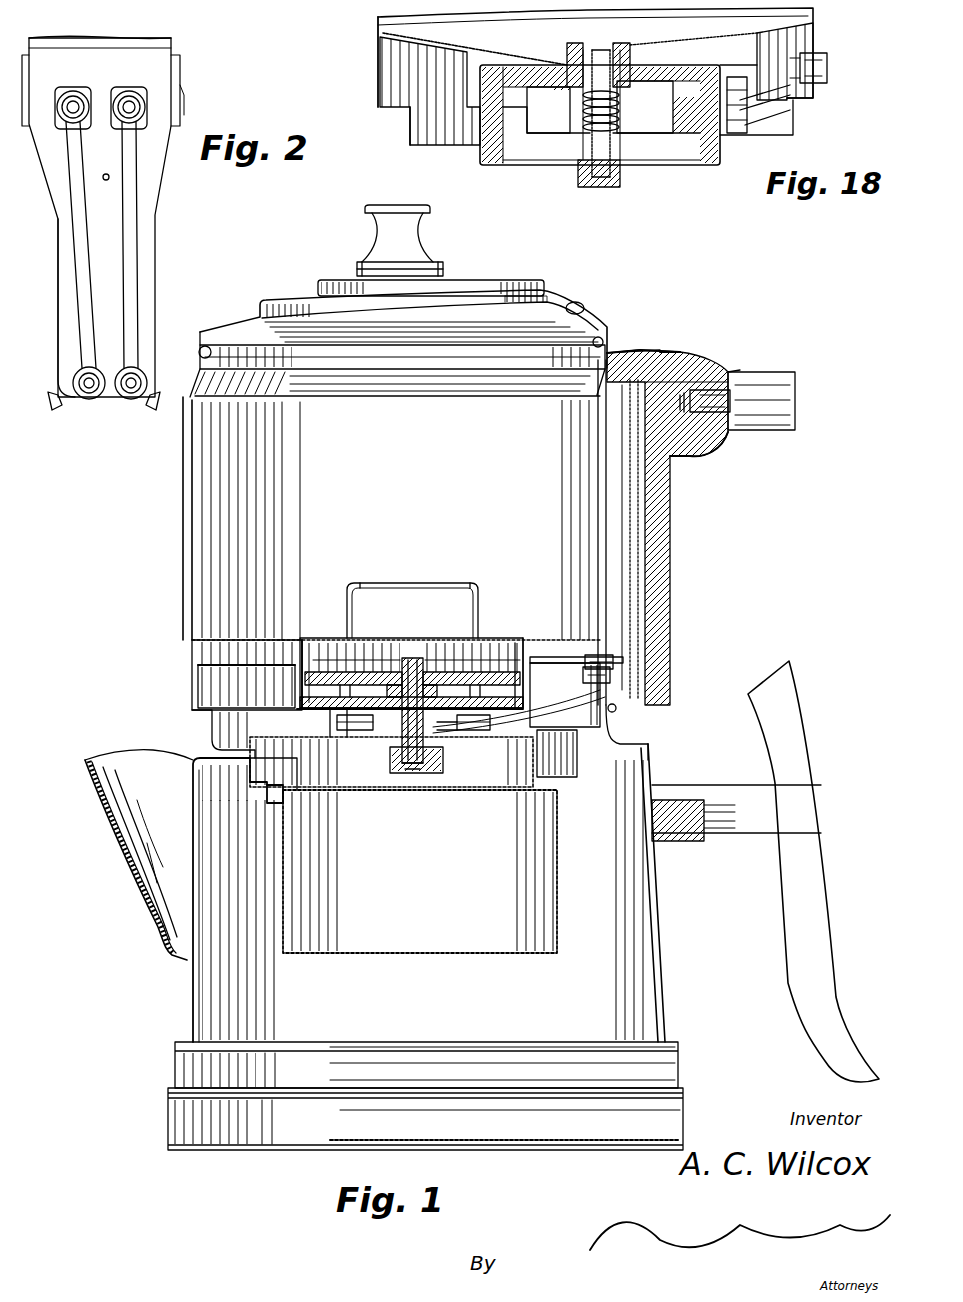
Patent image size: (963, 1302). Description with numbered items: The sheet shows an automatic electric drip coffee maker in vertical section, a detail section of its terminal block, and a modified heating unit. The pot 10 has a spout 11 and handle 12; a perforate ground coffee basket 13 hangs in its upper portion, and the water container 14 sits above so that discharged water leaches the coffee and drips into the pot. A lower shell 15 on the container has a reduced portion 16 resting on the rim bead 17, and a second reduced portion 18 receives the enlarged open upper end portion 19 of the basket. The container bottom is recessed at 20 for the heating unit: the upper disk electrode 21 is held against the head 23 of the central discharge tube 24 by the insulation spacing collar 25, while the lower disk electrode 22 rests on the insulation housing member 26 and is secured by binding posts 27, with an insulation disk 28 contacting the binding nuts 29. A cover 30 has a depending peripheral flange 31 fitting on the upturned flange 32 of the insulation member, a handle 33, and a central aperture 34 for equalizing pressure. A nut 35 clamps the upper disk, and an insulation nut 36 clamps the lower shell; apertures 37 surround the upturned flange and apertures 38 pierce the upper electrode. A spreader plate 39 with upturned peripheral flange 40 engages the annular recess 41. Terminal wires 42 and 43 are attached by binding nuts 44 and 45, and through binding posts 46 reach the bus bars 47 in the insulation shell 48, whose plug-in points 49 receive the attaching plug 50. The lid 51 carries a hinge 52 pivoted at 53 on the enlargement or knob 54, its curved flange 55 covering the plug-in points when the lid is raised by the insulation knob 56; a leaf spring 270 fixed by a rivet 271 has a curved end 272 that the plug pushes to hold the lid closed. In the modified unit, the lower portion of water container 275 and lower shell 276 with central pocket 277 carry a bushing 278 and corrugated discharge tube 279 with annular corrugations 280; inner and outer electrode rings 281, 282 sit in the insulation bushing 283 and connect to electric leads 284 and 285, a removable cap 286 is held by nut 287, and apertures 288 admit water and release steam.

In FIG. 1, the pot 10 is at (665, 955).
In FIG. 1, the spout 11 is at (125, 845).
In FIG. 1, the handle 12 is at (807, 763).
In FIG. 1, the ground coffee basket 13 is at (558, 897).
In FIG. 1, the water container 14 is at (185, 520).
In FIG. 1, the lower shell 15 is at (198, 690).
In FIG. 1, the reduced portion 16 is at (213, 730).
In FIG. 1, the rim bead 17 is at (617, 710).
In FIG. 1, the second reduced portion 18 is at (298, 762).
In FIG. 1, the open upper end portion of coffee basket 19 is at (630, 758).
In FIG. 1, the central recess 20 is at (305, 665).
In FIG. 1, the upper disk electrode 21 is at (410, 655).
In FIG. 1, the lower disk electrode 22 is at (340, 680).
In FIG. 1, the head 23 is at (445, 658).
In FIG. 1, the central discharge tube 24 is at (495, 660).
In FIG. 1, the insulation spacing collar 25 is at (425, 655).
In FIG. 1, the insulation housing member 26 is at (520, 700).
In FIG. 1, the binding posts 27 is at (380, 660).
In FIG. 1, the insulation disk 28 is at (352, 722).
In FIG. 1, the binding nuts 29 is at (372, 745).
In FIG. 1, the cover 30 is at (500, 650).
In FIG. 1, the depending peripheral flange 31 is at (332, 650).
In FIG. 1, the upturned flange 32 is at (540, 660).
In FIG. 1, the handle 33 is at (425, 583).
In FIG. 1, the central aperture 34 is at (468, 583).
In FIG. 1, the nut 35 is at (396, 720).
In FIG. 1, the insulation nut 36 is at (430, 775).
In FIG. 1, the apertures 37 is at (300, 680).
In FIG. 1, the apertures 38 is at (348, 650).
In FIG. 1, the spreader plate 39 is at (440, 790).
In FIG. 1, the upturned peripheral flange 40 is at (487, 760).
In FIG. 1, the annular recess 41 is at (255, 797).
In FIG. 1, the terminal wire 42 is at (580, 780).
In FIG. 2, the terminal wire 42 is at (146, 400).
In FIG. 1, the terminal wire 43 is at (437, 708).
In FIG. 2, the terminal wire 43 is at (60, 400).
In FIG. 1, the binding nut 44 is at (425, 745).
In FIG. 1, the binding nut 45 is at (412, 775).
In FIG. 1, the binding posts 46 is at (673, 660).
In FIG. 2, the binding posts 46 is at (92, 392).
In FIG. 1, the bus bars 47 is at (645, 543).
In FIG. 2, the bus bars 47 is at (88, 330).
In FIG. 1, the insulation shell 48 is at (668, 585).
In FIG. 2, the insulation shell 48 is at (152, 200).
In FIG. 1, the plug-in points 49 is at (715, 395).
In FIG. 2, the plug-in points 49 is at (129, 107).
In FIG. 1, the attaching plug 50 is at (770, 395).
In FIG. 1, the lid 51 is at (508, 292).
In FIG. 1, the hinge 52 is at (622, 350).
In FIG. 2, the hinge 52 is at (170, 42).
In FIG. 1, the hinge pivot 53 is at (690, 385).
In FIG. 2, the hinge pivot 53 is at (182, 88).
In FIG. 1, the enlargement or knob 54 is at (695, 452).
In FIG. 2, the enlargement or knob 54 is at (165, 62).
In FIG. 1, the curved flange 55 is at (700, 392).
In FIG. 1, the insulation knob 56 is at (420, 231).
In FIG. 1, the leaf spring 270 is at (672, 352).
In FIG. 1, the rivet 271 is at (648, 350).
In FIG. 1, the curved end 272 is at (745, 372).
In FIG. 18, the lower portion of water container 275 is at (816, 22).
In FIG. 18, the lower shell 276 is at (380, 72).
In FIG. 18, the central upwardly disposed pocket 277 is at (460, 95).
In FIG. 18, the bushing 278 is at (600, 48).
In FIG. 18, the discharge tube 279 is at (638, 160).
In FIG. 18, the annular corrugations 280 is at (622, 117).
In FIG. 18, the inner electrode ring 281 is at (530, 115).
In FIG. 18, the outer electrode ring 282 is at (510, 126).
In FIG. 18, the insulation bushing 283 is at (492, 138).
In FIG. 18, the electric lead 284 is at (768, 95).
In FIG. 18, the electric lead 285 is at (790, 100).
In FIG. 18, the removable cap 286 is at (522, 163).
In FIG. 18, the nut 287 is at (608, 188).
In FIG. 18, the apertures 288 is at (630, 48).